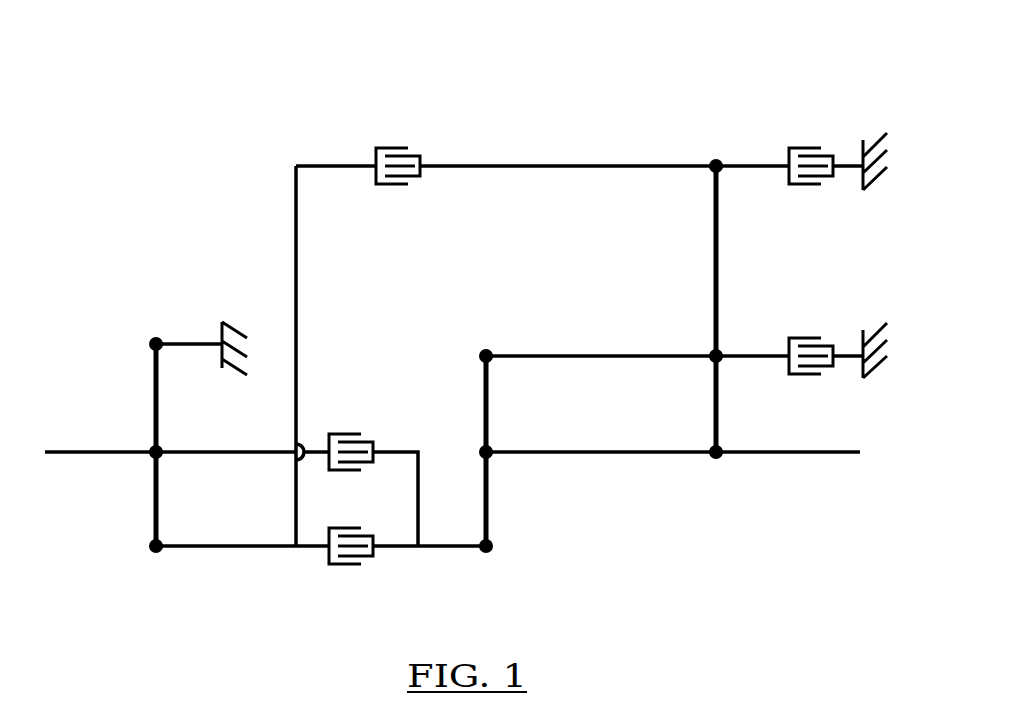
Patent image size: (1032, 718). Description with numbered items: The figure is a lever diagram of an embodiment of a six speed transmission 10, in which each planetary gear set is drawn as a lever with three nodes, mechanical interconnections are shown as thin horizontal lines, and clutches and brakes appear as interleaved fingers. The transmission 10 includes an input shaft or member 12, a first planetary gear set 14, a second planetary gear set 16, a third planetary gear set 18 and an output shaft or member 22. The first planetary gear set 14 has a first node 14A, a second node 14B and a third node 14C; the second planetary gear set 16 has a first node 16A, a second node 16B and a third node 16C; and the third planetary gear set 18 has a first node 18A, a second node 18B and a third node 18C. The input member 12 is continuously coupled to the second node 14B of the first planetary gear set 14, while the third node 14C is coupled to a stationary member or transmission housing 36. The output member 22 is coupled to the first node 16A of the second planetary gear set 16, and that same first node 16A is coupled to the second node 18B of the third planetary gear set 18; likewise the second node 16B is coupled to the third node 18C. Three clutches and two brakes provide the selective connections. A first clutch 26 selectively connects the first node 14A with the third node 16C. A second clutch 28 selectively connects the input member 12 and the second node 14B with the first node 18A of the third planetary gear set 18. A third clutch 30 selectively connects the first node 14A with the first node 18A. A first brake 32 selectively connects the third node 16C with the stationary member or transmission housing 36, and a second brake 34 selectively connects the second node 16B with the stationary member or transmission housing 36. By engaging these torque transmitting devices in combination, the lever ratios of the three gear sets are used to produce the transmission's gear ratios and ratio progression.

The six speed transmission 10 is at (761, 75).
The input shaft or member 12 is at (58, 456).
The first planetary gear set 14 is at (141, 565).
The first node of the first planetary gear set 14A is at (159, 554).
The second node of the first planetary gear set 14B is at (160, 447).
The third node of the first planetary gear set 14C is at (156, 337).
The second planetary gear set 16 is at (702, 469).
The first node of the second planetary gear set 16A is at (719, 460).
The second node of the second planetary gear set 16B is at (713, 350).
The third node of the second planetary gear set 16C is at (716, 158).
The third planetary gear set 18 is at (473, 566).
The first node of the third planetary gear set 18A is at (489, 554).
The second node of the third planetary gear set 18B is at (489, 447).
The third node of the third planetary gear set 18C is at (485, 349).
The output shaft or member 22 is at (843, 458).
The first clutch 26 is at (395, 147).
The second clutch 28 is at (349, 432).
The third clutch 30 is at (345, 566).
The first brake 32 is at (805, 147).
The second brake 34 is at (805, 337).
The stationary member or transmission housing 36 is at (239, 329).